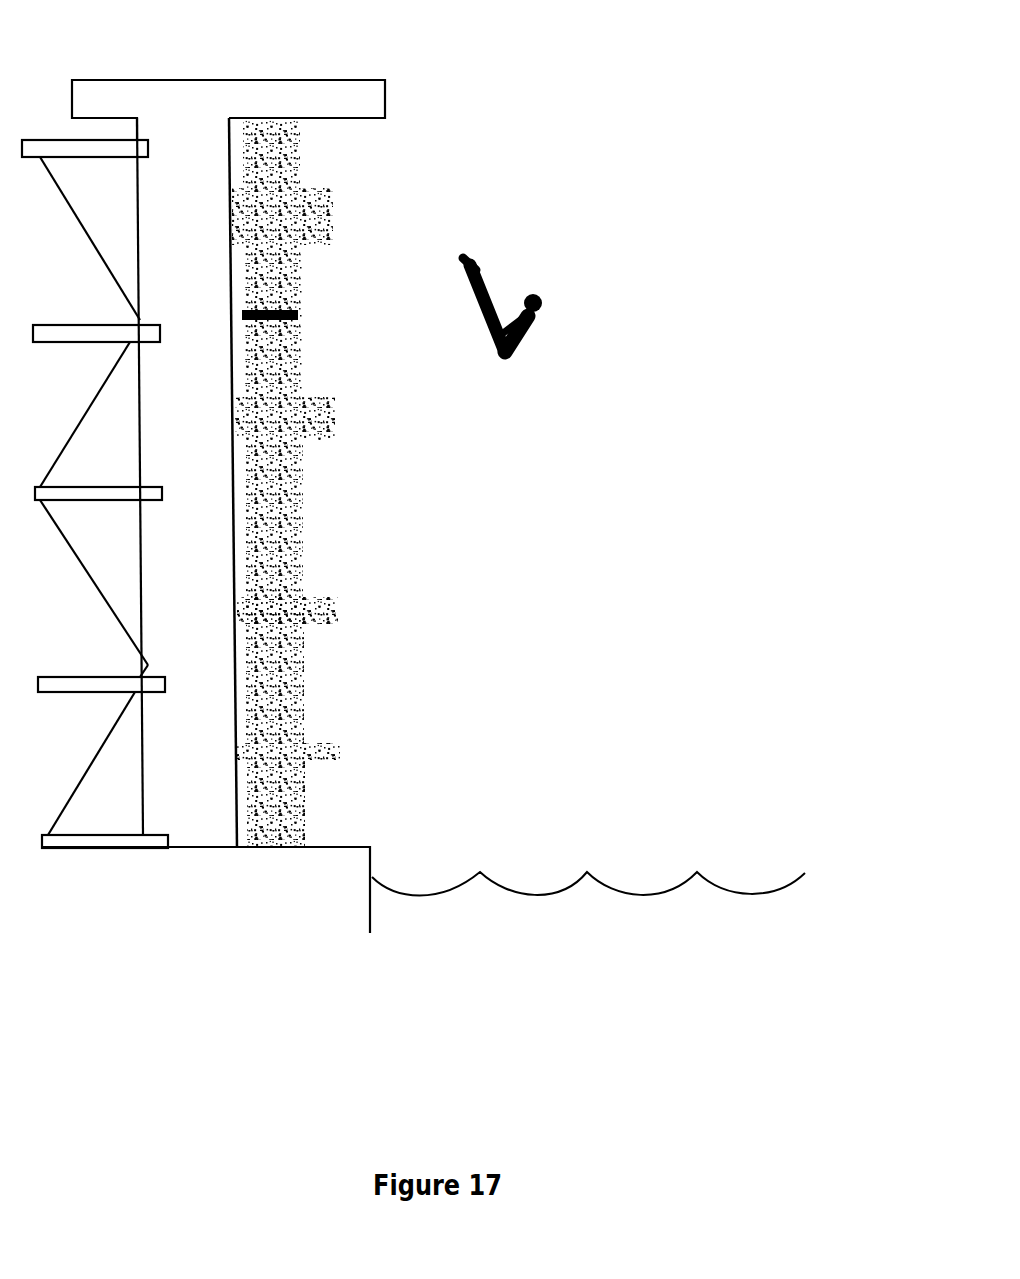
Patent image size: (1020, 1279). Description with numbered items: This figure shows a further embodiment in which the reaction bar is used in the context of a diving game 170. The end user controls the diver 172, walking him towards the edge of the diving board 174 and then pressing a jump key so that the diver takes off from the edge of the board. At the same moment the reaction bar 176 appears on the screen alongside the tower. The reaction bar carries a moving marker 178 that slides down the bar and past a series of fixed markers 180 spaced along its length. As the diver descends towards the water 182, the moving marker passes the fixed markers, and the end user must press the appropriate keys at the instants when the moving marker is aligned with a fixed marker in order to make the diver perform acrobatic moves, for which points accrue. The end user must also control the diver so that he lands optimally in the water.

The diving game 170 is at (752, 533).
The diver 172 is at (592, 311).
The diving board 174 is at (387, 82).
The reaction bar 176 is at (308, 703).
The moving marker 178 is at (305, 312).
The fixed markers 180 is at (340, 610).
The water 182 is at (705, 870).